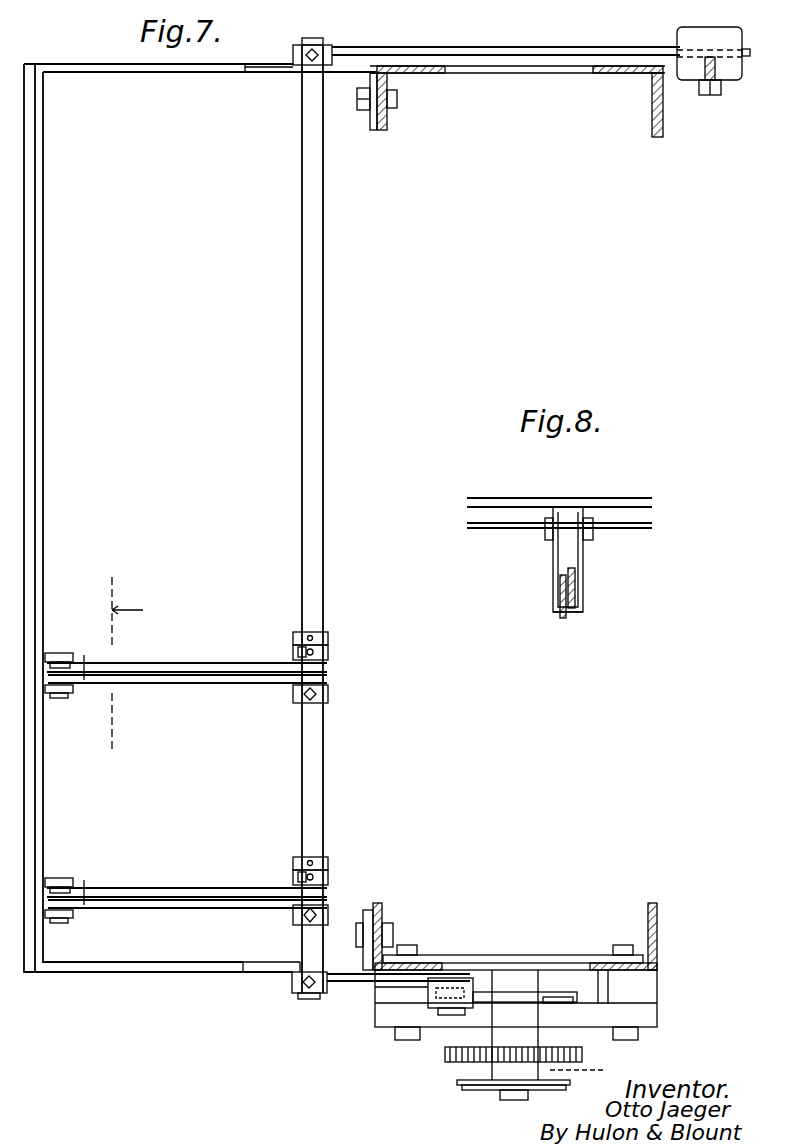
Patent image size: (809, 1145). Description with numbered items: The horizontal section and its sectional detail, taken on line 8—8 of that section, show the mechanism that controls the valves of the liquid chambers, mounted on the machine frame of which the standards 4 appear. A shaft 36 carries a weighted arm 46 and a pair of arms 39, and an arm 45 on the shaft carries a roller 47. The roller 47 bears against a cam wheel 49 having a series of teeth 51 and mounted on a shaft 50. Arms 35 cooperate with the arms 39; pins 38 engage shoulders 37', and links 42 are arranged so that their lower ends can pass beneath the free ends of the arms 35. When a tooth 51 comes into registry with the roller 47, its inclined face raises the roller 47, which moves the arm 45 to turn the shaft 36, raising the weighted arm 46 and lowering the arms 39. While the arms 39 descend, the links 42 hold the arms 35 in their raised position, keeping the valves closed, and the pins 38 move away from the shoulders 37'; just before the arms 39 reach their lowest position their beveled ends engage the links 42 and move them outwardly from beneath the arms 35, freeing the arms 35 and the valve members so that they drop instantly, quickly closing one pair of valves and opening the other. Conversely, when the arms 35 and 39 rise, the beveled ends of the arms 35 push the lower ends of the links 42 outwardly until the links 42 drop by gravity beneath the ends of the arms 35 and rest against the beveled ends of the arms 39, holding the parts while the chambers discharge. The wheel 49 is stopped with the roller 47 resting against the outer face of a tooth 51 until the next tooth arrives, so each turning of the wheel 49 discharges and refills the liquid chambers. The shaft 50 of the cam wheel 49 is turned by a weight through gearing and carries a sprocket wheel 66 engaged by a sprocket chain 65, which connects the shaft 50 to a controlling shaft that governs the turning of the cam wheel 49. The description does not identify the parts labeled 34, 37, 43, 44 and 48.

In FIG. 7, the standards 4 is at (383, 130).
In FIG. 7, the section line 8 is at (123, 664).
In FIG. 7, the pin 34 is at (84, 655).
In FIG. 7, the arms 35 is at (175, 665).
In FIG. 8, the arms 35 is at (575, 582).
In FIG. 7, the shaft 36 is at (323, 348).
In FIG. 7, the bracket plate 37 is at (260, 537).
In FIG. 7, the shoulders 37' is at (351, 772).
In FIG. 7, the pins 38 is at (310, 657).
In FIG. 7, the arms 39 is at (183, 683).
In FIG. 8, the arms 39 is at (560, 592).
In FIG. 7, the links 42 is at (62, 697).
In FIG. 8, the links 42 is at (583, 602).
In FIG. 7, the upper bracket 43 is at (62, 653).
In FIG. 8, the upper bracket 43 is at (565, 522).
In FIG. 7, the frame rail 44 is at (43, 346).
In FIG. 8, the frame rail 44 is at (487, 498).
In FIG. 7, the arm 45 is at (350, 983).
In FIG. 7, the weighted arm 46 is at (455, 40).
In FIG. 7, the roller 47 is at (430, 990).
In FIG. 7, the housing 48 is at (700, 35).
In FIG. 7, the cam wheel 49 is at (510, 992).
In FIG. 7, the shaft 50 is at (510, 1100).
In FIG. 7, the tooth 51 is at (555, 997).
In FIG. 7, the sprocket chain 65 is at (480, 1080).
In FIG. 7, the sprocket wheel 66 is at (484, 1088).